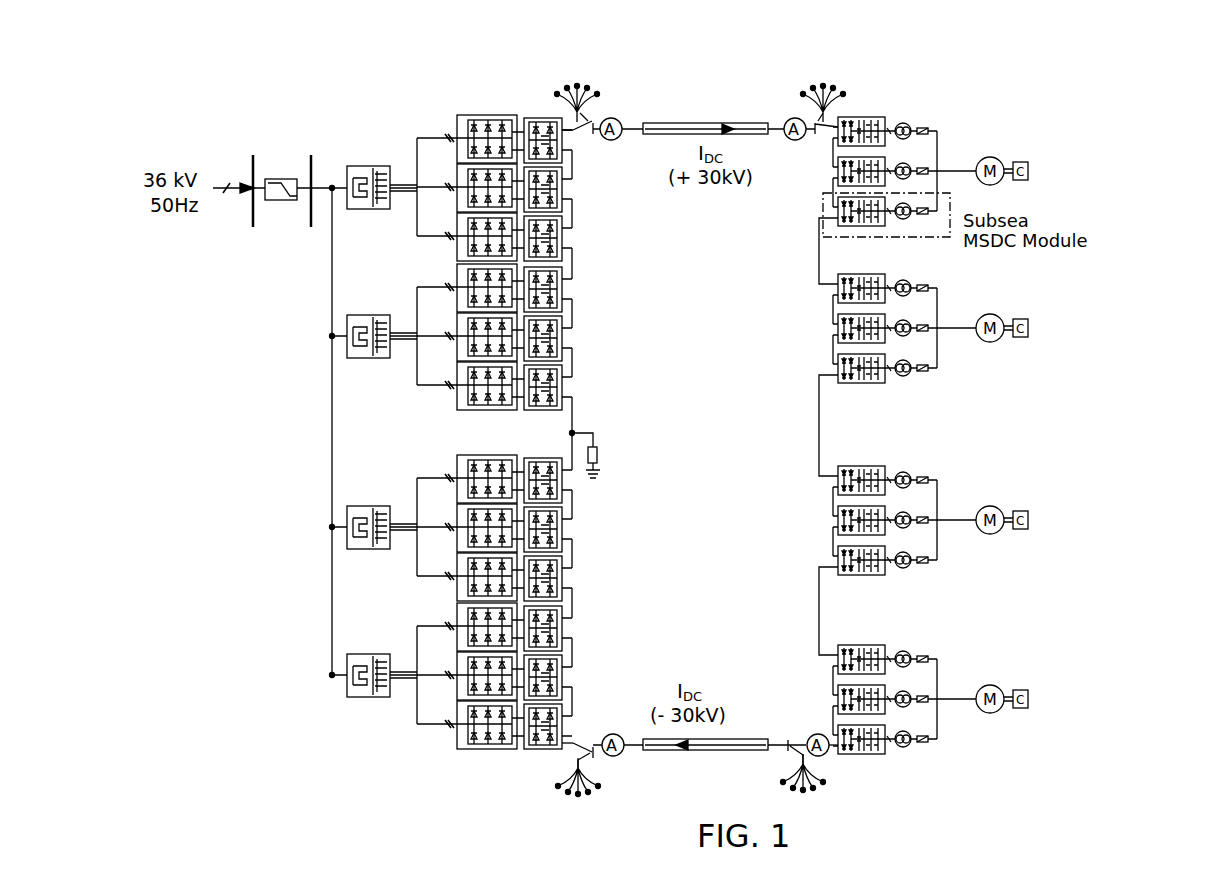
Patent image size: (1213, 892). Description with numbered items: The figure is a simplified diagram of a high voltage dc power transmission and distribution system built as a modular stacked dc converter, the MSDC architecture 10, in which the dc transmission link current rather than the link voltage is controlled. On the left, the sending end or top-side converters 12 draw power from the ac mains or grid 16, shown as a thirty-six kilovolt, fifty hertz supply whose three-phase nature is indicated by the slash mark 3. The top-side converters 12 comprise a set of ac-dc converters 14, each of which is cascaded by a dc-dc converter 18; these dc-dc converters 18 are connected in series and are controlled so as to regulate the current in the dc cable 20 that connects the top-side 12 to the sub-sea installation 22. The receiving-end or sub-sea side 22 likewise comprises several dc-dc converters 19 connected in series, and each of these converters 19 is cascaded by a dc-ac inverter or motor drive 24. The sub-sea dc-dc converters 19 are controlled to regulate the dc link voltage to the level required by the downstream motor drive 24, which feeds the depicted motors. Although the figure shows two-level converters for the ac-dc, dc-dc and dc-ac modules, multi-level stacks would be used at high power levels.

The MSDC architecture 10 is at (1007, 88).
The sending end/top-side converters 12 is at (498, 83).
The ac-dc converters 14 is at (457, 98).
The ac mains or grid 16 is at (207, 170).
The three-phase indicator 3 is at (226, 177).
The dc-dc converter 18 is at (536, 410).
The dc-dc converters 19 is at (847, 388).
The dc cable 20 is at (741, 119).
The sub-sea installation 22 is at (878, 90).
The dc-ac inverter/motor drive 24 is at (882, 383).